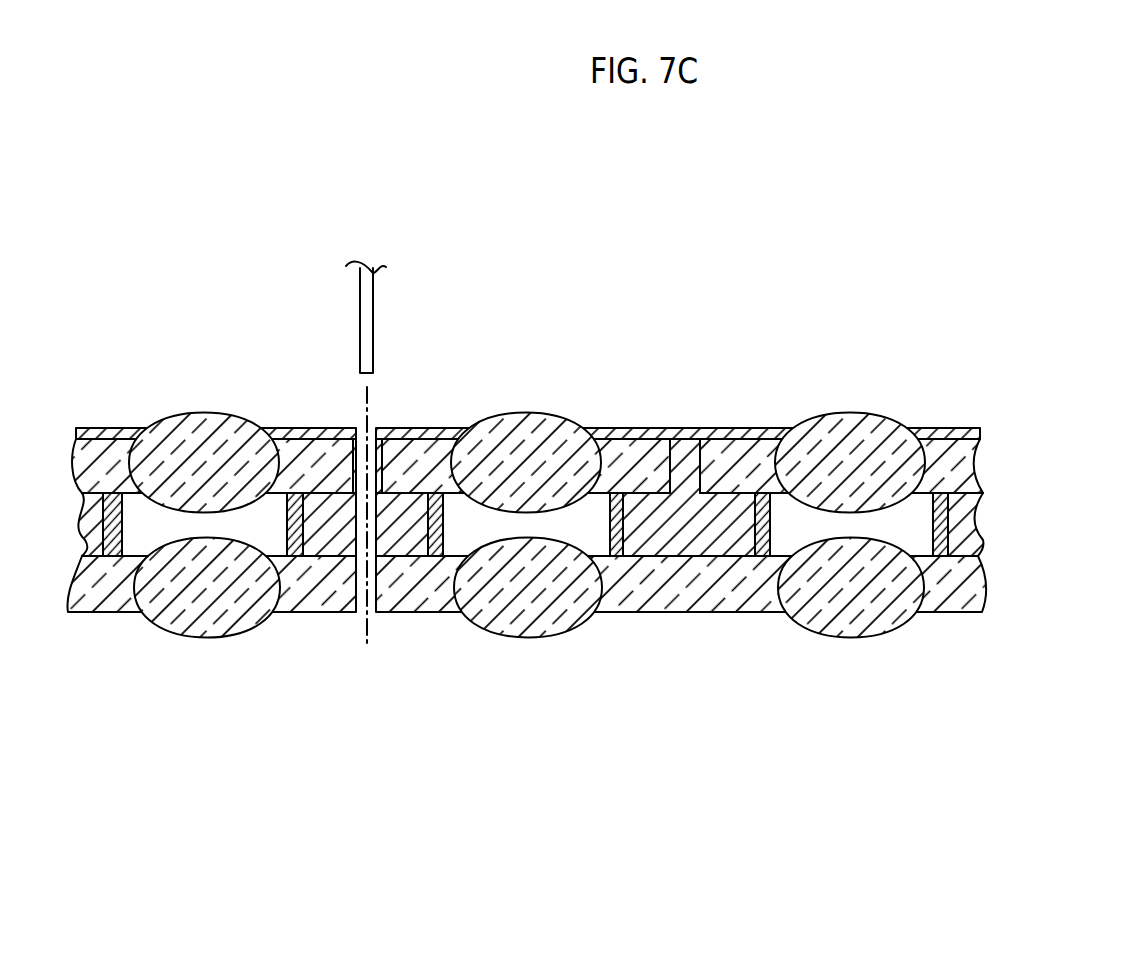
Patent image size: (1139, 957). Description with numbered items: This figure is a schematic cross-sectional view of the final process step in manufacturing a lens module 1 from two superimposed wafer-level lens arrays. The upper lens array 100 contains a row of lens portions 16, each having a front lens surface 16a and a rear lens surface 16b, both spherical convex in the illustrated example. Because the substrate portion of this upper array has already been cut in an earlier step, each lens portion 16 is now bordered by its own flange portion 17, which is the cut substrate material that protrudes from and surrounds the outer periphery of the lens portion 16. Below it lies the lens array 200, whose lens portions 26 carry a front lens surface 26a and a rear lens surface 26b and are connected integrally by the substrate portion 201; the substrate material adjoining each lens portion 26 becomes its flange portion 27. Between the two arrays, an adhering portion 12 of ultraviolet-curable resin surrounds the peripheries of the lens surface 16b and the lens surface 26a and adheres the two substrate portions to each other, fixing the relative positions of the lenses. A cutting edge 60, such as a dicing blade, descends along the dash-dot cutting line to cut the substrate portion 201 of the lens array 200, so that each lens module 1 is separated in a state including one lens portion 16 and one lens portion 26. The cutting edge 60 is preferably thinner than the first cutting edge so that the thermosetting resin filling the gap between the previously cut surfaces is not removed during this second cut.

The lens module 1 is at (207, 336).
The adhering portion 12 is at (113, 430).
The lens portion 16 is at (182, 436).
The lens surface 16a is at (230, 412).
The lens surface 16b is at (235, 507).
The flange portion 17 is at (420, 430).
The lens portion 26 is at (198, 602).
The lens surface 26a is at (253, 536).
The lens surface 26b is at (227, 639).
The flange portion 27 is at (334, 609).
The cutting edge 60 is at (410, 305).
The lens array 100 is at (1000, 443).
The lens array 200 is at (1000, 565).
The substrate portion 201 is at (710, 609).